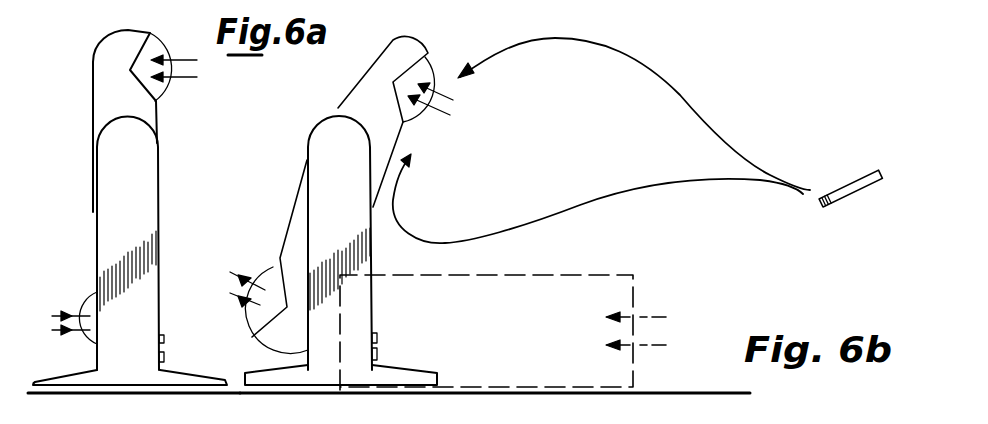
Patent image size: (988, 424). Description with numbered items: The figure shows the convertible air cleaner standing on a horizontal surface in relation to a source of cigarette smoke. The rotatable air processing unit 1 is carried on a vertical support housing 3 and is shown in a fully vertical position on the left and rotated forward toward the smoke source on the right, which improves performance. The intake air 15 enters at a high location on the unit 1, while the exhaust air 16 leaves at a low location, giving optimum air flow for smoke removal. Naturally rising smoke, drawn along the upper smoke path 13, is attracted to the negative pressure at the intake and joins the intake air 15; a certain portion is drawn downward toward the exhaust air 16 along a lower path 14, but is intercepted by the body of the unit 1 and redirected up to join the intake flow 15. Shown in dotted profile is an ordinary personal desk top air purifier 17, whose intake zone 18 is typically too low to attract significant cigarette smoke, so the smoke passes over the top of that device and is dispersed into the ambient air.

In FIG. 6a, the air processing unit 1 is at (105, 104).
In FIG. 6a, the vertical support housing 3 is at (138, 187).
In FIG. 6b, the smoke stream 13 is at (667, 73).
In FIG. 6b, the lower path 14 is at (537, 223).
In FIG. 6a, the intake air 15 is at (179, 67).
In FIG. 6b, the intake air 15 is at (428, 98).
In FIG. 6a, the exhaust air 16 is at (74, 324).
In FIG. 6b, the exhaust air 16 is at (269, 306).
In FIG. 6b, the ordinary personal desk top air purifier 17 is at (593, 273).
In FIG. 6b, the intake zone 18 is at (640, 321).